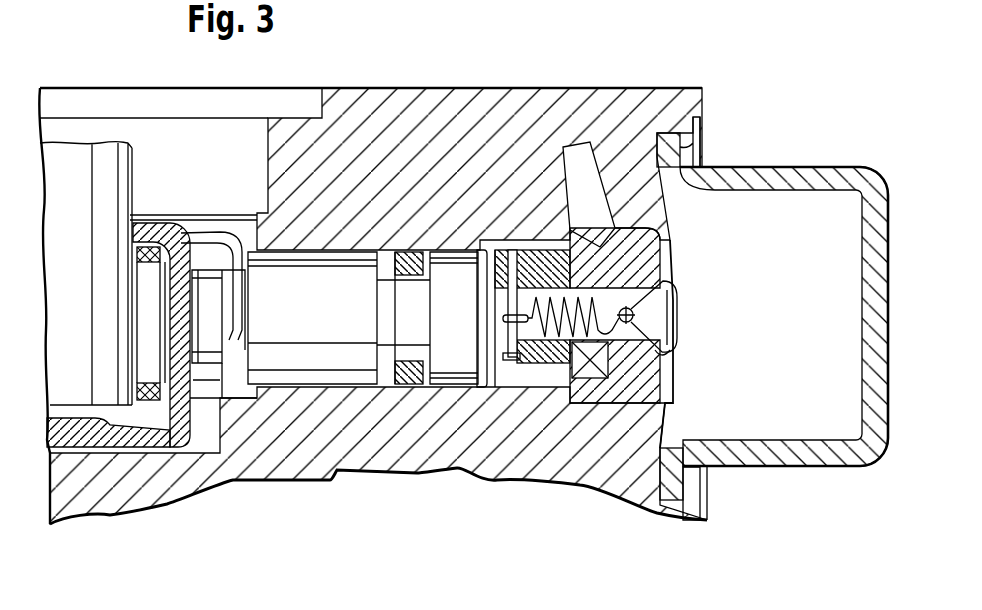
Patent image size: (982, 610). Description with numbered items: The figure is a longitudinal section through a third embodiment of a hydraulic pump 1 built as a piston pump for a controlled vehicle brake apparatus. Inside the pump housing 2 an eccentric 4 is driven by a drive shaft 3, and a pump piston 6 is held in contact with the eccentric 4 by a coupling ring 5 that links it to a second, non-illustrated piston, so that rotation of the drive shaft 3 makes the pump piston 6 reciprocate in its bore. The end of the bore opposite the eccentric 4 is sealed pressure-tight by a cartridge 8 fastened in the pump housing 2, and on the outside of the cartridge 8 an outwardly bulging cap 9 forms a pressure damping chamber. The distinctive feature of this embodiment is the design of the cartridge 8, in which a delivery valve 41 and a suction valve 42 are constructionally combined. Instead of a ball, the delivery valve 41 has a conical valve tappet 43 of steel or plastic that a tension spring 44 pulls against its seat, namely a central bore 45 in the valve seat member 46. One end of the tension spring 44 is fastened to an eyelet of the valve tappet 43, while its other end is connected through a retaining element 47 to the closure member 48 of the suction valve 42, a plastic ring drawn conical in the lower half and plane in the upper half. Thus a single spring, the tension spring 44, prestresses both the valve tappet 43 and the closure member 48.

The hydraulic pump 1 is at (713, 106).
The pump housing 2 is at (87, 497).
The drive shaft 3 is at (70, 163).
The eccentric 4 is at (100, 433).
The coupling ring 5 is at (212, 231).
The pump piston 6 is at (327, 358).
The cartridge 8 is at (673, 252).
The cap 9 is at (808, 178).
The delivery valve 41 is at (679, 272).
The suction valve 42 is at (542, 368).
The valve tappet 43 is at (660, 320).
The tension spring 44 is at (555, 290).
The central bore 45 is at (662, 352).
The valve seat member 46 is at (636, 385).
The retaining element 47 is at (500, 382).
The closure member 48 is at (568, 380).